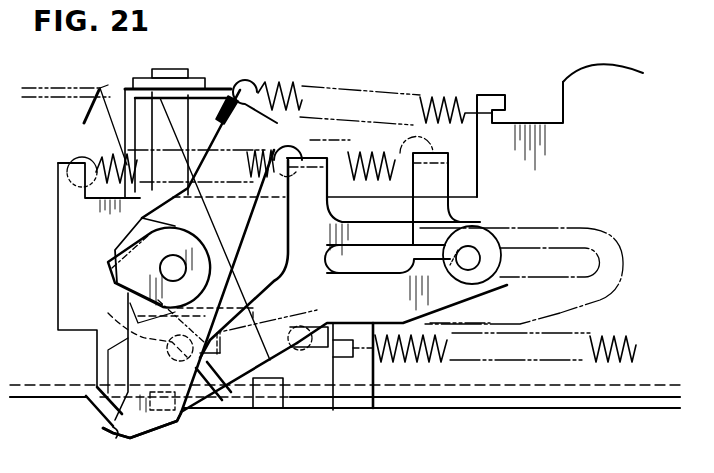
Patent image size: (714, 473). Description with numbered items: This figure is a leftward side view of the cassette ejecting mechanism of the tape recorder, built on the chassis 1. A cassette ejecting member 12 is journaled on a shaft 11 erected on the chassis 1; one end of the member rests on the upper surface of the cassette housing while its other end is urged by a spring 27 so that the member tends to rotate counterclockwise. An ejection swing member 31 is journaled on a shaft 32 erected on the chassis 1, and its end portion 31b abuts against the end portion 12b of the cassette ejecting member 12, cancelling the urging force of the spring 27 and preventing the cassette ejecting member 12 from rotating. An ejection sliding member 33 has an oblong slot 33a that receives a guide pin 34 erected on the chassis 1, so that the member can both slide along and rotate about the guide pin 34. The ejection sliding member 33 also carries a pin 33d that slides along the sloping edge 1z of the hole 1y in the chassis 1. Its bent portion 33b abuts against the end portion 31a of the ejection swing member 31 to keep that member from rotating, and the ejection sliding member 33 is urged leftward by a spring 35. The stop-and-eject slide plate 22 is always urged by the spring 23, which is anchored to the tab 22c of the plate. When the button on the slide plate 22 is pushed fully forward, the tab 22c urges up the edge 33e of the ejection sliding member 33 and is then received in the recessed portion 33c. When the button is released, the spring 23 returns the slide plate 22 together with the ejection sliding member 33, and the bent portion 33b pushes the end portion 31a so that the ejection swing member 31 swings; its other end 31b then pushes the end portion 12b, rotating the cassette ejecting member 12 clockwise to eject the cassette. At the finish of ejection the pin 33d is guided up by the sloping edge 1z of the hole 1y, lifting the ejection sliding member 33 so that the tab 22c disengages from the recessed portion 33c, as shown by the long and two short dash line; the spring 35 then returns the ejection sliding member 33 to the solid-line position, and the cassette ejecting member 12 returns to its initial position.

The chassis 1 is at (606, 76).
The shaft 11 is at (163, 69).
The cassette ejecting member 12 is at (214, 86).
The end portion of the cassette ejecting member 12b is at (299, 148).
The spring 27 is at (436, 100).
The ejection swing member 31 is at (112, 276).
The end portion of the ejection swing member 31a is at (107, 393).
The end portion of the ejection swing member 31b is at (241, 76).
The shaft 32 is at (170, 267).
The ejection sliding member 33 is at (346, 222).
The oblong slot 33a is at (424, 254).
The bent portion 33b is at (108, 437).
The recessed portion 33c is at (160, 356).
The pin 33d is at (108, 313).
The edge 33e is at (226, 410).
The guide pin 34 is at (492, 285).
The spring 35 is at (296, 152).
The spring 23 is at (605, 334).
The stop-and-eject slide plate 22 is at (546, 409).
The tab 22c is at (280, 406).
The hole of the chassis 1y is at (250, 318).
The sloping edge of the hole 1z is at (290, 372).